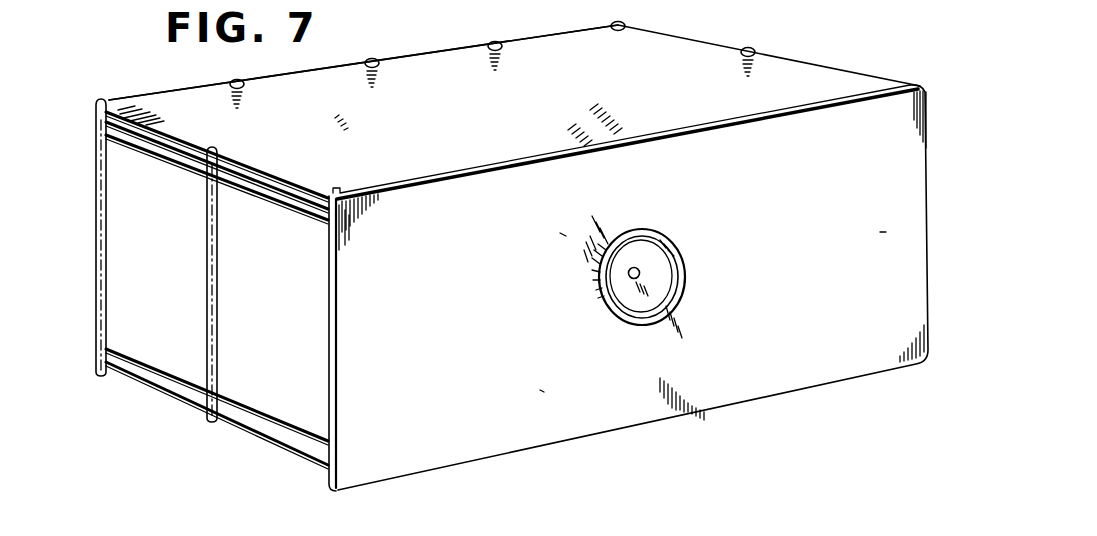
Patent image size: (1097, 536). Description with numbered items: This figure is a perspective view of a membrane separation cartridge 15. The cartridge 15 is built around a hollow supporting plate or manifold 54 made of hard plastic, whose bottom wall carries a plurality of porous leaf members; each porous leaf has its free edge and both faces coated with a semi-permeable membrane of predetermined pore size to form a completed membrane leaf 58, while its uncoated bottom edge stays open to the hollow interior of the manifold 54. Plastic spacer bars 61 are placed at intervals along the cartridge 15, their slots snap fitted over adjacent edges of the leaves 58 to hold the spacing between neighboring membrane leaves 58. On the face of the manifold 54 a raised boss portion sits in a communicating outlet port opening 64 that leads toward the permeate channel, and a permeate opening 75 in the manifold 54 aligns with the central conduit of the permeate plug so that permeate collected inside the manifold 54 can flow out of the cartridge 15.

The membrane cartridge 15 is at (838, 72).
The manifold 54 is at (787, 168).
The membrane leaf 58 is at (163, 112).
The spacer bar 61 is at (96, 168).
The outlet port opening 64 is at (686, 281).
The permeate opening 75 is at (640, 277).